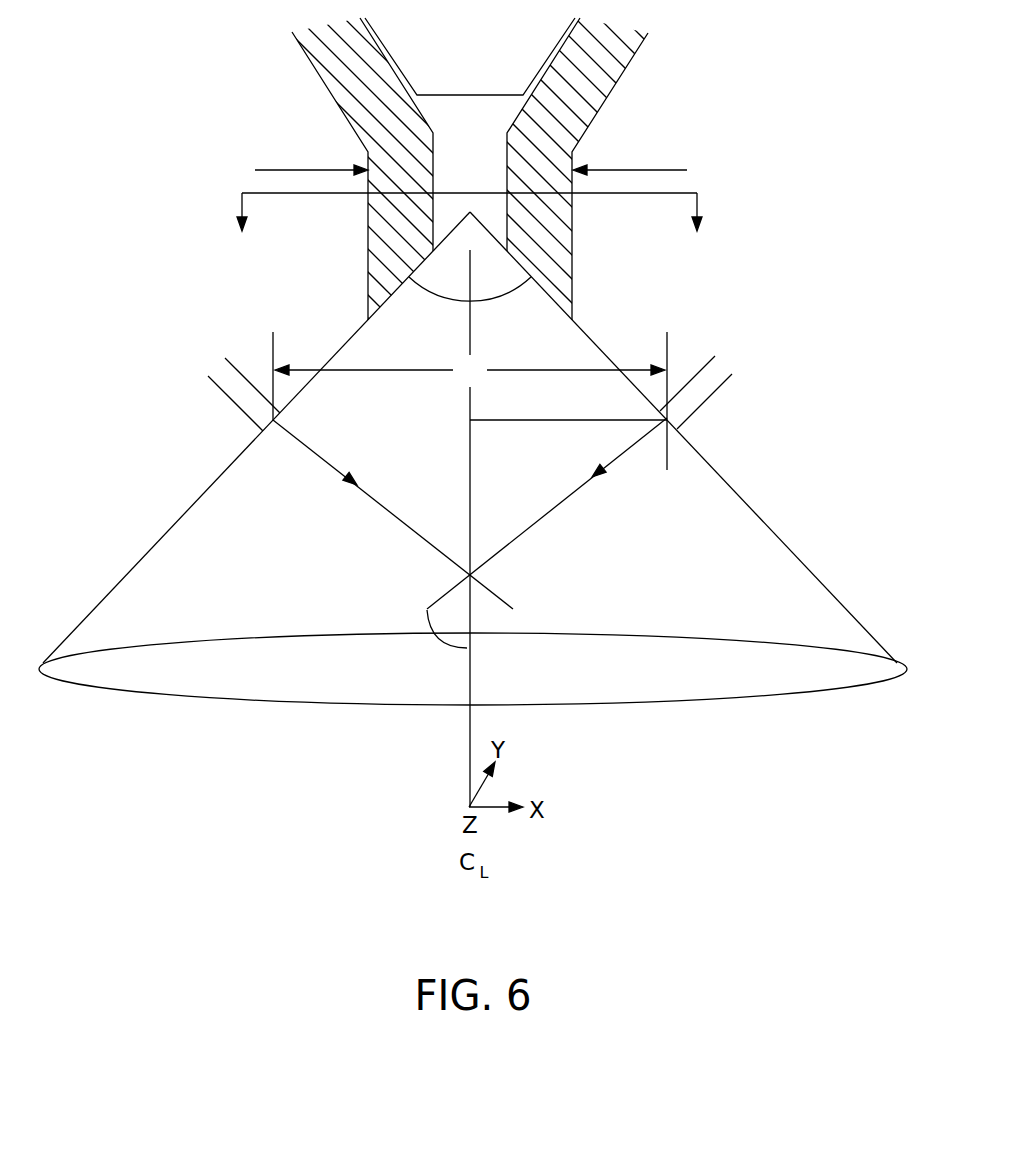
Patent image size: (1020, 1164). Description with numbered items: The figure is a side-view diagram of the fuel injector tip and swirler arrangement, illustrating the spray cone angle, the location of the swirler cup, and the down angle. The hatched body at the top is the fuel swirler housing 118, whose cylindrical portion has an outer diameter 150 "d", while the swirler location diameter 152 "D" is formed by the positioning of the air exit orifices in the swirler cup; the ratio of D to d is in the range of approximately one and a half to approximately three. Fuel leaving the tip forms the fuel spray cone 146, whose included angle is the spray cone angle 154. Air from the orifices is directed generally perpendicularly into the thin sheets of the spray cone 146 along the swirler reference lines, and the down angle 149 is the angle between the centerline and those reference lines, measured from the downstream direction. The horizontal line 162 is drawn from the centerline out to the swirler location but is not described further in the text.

The nozzle wall 118 is at (523, 47).
The fuel spray cone 146 is at (213, 698).
The down angle φ 149 is at (437, 638).
The outer diameter d 150 is at (285, 168).
The diameter D 152 is at (542, 370).
The spray cone angle α 154 is at (435, 295).
The radius line 162 is at (513, 420).